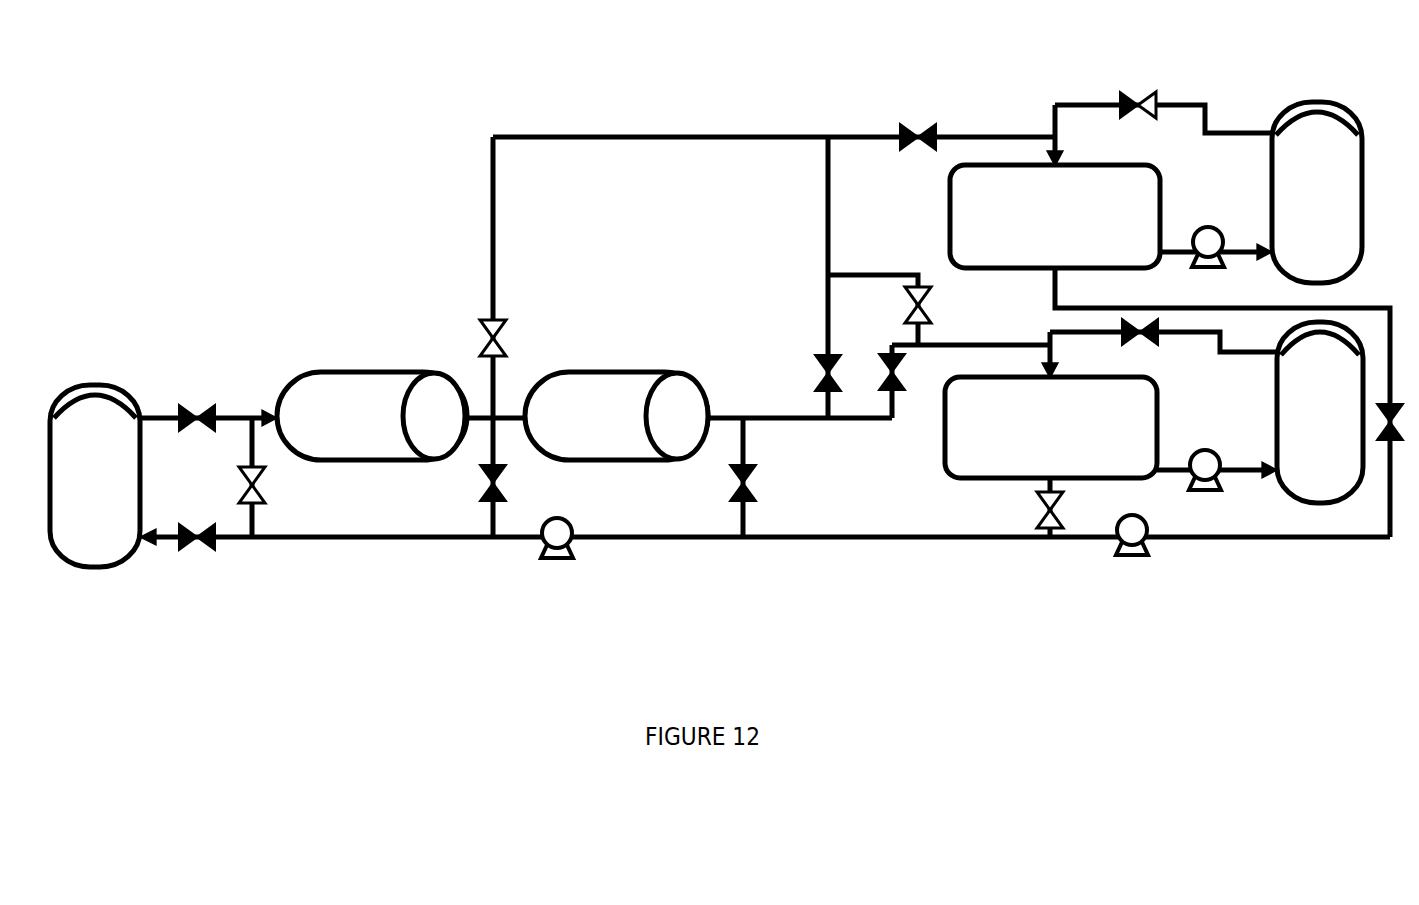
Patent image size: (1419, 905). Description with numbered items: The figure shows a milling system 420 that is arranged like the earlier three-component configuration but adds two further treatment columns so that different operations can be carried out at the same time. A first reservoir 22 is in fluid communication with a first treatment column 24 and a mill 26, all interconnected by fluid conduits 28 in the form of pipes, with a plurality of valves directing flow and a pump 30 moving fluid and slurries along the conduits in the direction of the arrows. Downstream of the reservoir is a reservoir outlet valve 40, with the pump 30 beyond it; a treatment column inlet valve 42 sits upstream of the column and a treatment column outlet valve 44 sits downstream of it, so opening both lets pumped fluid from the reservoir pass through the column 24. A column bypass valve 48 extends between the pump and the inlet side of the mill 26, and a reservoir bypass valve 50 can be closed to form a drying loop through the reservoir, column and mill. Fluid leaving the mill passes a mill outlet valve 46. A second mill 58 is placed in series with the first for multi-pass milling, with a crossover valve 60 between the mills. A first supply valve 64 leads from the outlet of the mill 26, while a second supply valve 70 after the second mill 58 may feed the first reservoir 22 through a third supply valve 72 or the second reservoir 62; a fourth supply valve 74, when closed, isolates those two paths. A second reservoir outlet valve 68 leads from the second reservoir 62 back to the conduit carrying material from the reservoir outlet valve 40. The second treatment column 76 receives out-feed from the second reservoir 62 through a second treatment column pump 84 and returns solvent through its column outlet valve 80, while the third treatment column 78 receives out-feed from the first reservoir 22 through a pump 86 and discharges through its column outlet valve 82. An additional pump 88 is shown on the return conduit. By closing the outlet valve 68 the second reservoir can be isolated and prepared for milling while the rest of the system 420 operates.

The milling system 420 is at (385, 190).
The treatment column 24 is at (130, 500).
The treatment column outlet valve 44 is at (198, 408).
The treatment column inlet valve 42 is at (200, 550).
The column bypass valve 48 is at (262, 492).
The mill 26 is at (358, 455).
The first supply valve 64 is at (505, 345).
The crossover valve 60 is at (505, 492).
The second mill 58 is at (646, 382).
The reservoir bypass valve 50 is at (752, 490).
The pump 30 is at (572, 560).
The fluid conduits 28 is at (875, 538).
The second supply valve 70 is at (816, 373).
The third supply valve 72 is at (910, 395).
The fourth supply valve 74 is at (930, 302).
The mill outlet valve 46 is at (925, 152).
The second reservoir 62 is at (1150, 197).
The second column outlet valve 80 is at (1125, 96).
The second treatment column pump 84 is at (1215, 232).
The second treatment column 76 is at (1290, 125).
The second reservoir outlet valve 68 is at (1395, 400).
The reservoir 22 is at (1145, 420).
The third column outlet valve 82 is at (1150, 340).
The pump 86 is at (1215, 452).
The third treatment column 78 is at (1300, 490).
The reservoir outlet valve 40 is at (1040, 500).
The pump 88 is at (1150, 560).